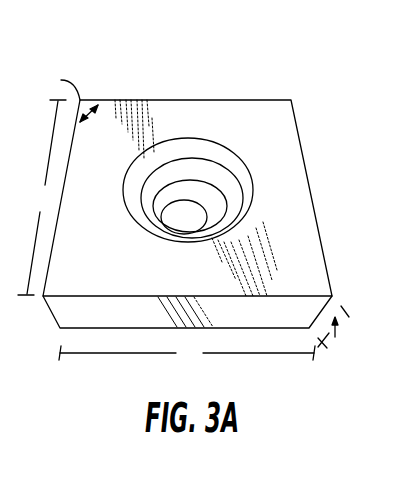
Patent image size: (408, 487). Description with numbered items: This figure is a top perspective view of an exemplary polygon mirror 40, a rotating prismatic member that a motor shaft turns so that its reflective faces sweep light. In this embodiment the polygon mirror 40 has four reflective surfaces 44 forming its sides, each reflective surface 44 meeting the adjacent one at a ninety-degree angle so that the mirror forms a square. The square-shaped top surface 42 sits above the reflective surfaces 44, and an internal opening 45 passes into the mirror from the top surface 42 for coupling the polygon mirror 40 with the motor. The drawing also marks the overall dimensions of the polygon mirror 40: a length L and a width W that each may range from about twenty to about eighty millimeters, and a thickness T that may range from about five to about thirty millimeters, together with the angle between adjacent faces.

The polygon mirror 40 is at (113, 51).
The top surface 42 is at (211, 112).
The reflective surfaces 44 is at (110, 315).
The internal opening 45 is at (183, 226).